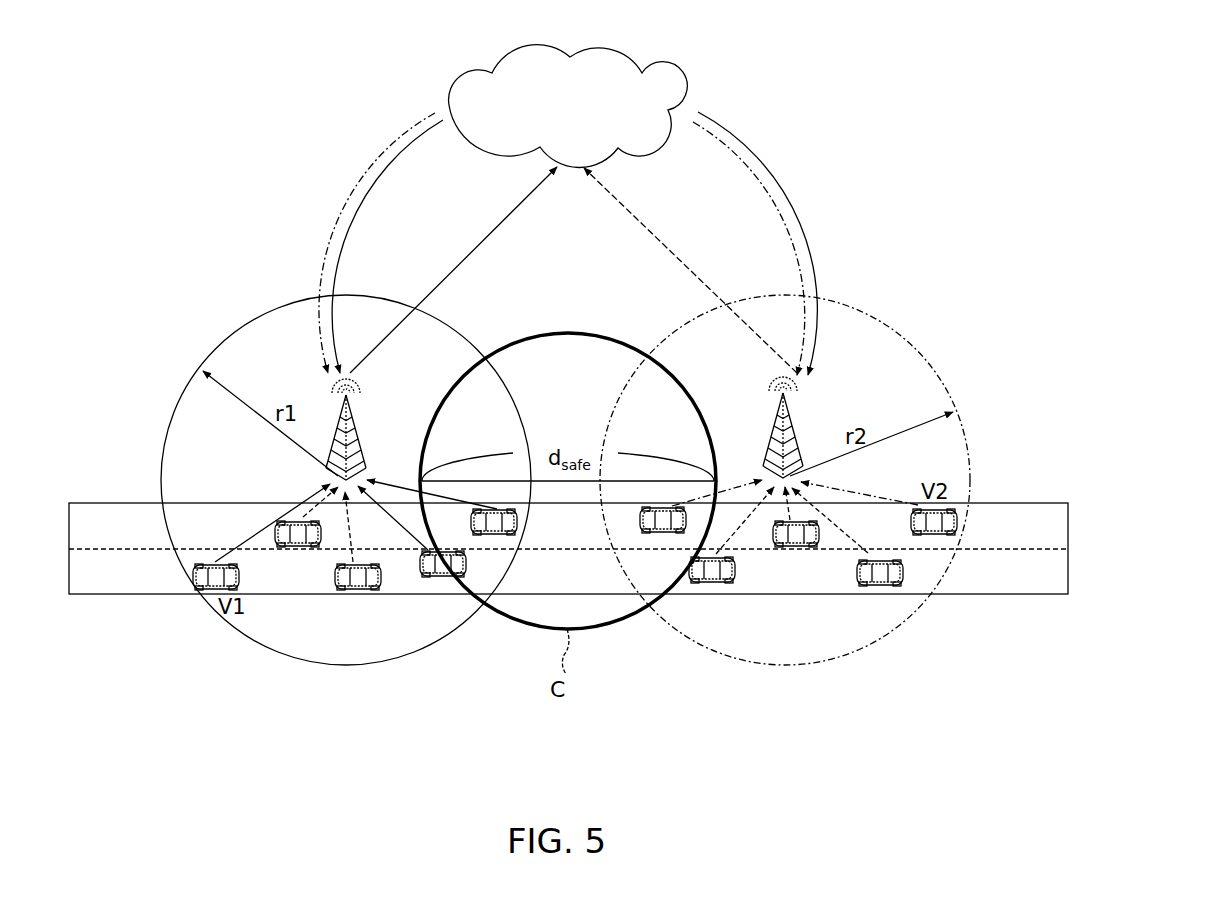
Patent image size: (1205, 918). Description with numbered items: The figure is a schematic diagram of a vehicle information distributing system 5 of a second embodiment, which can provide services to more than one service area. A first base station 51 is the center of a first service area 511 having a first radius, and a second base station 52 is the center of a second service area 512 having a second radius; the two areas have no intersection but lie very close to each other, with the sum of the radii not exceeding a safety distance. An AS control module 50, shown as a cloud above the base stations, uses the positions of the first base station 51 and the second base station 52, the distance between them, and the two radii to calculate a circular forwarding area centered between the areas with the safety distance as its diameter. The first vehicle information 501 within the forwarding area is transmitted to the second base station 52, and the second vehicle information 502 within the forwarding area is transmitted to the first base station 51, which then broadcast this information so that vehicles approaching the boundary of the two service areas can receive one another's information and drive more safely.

The vehicle information distributing system 5 is at (1077, 112).
The AS control module 50 is at (613, 47).
The first vehicle information 501 is at (463, 260).
The second vehicle information 502 is at (670, 255).
The first base station 51 is at (360, 437).
The second base station 52 is at (800, 431).
The first service area 511 is at (258, 643).
The second service area 512 is at (880, 640).